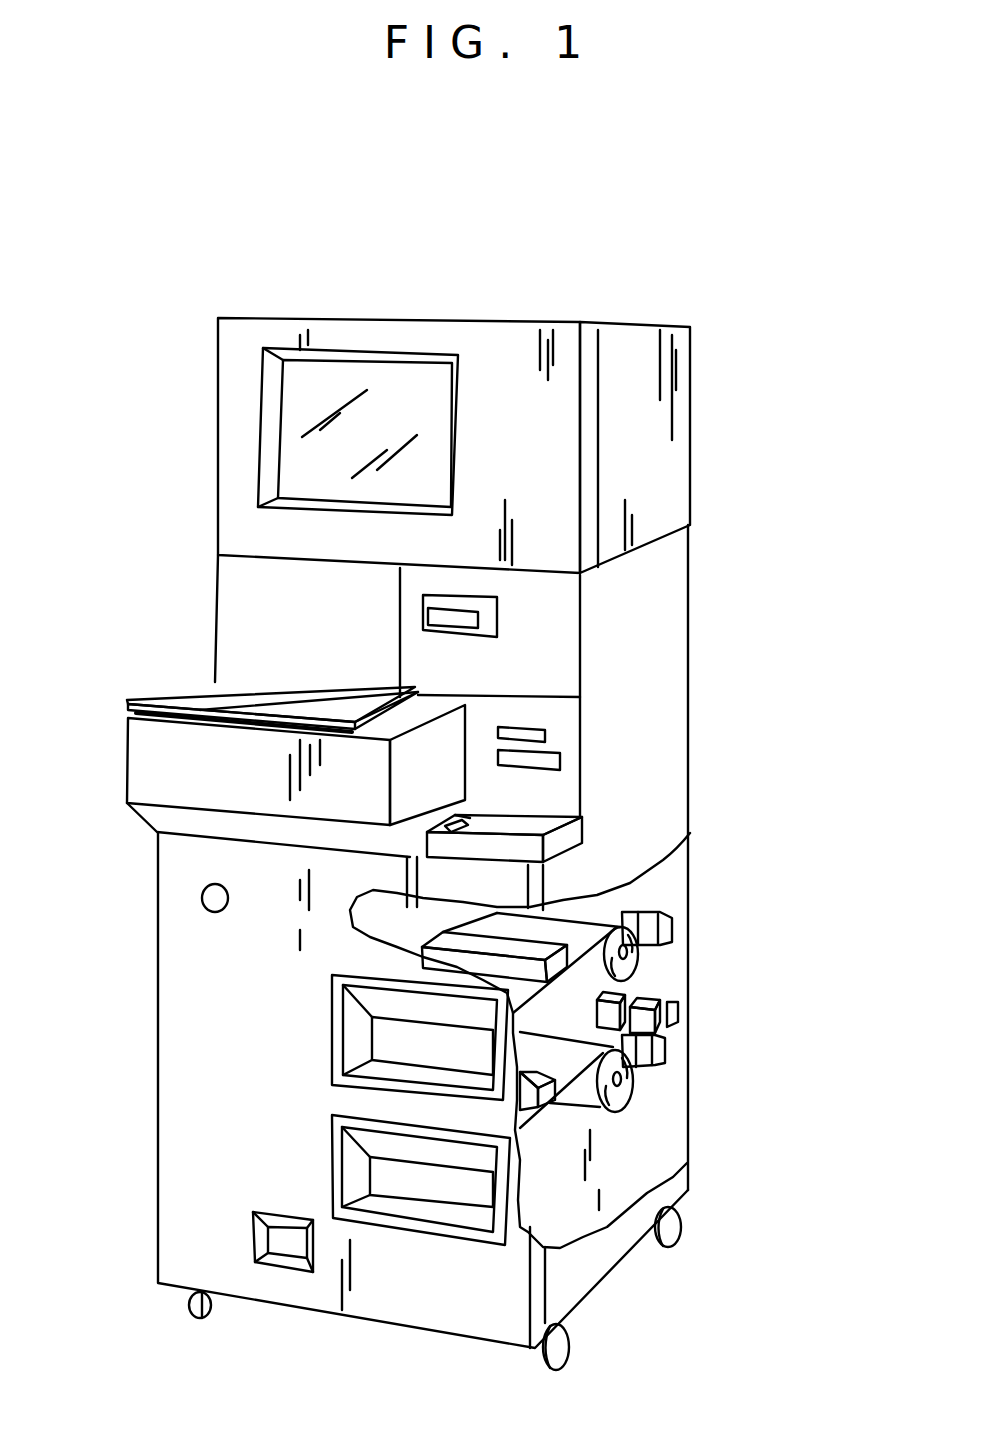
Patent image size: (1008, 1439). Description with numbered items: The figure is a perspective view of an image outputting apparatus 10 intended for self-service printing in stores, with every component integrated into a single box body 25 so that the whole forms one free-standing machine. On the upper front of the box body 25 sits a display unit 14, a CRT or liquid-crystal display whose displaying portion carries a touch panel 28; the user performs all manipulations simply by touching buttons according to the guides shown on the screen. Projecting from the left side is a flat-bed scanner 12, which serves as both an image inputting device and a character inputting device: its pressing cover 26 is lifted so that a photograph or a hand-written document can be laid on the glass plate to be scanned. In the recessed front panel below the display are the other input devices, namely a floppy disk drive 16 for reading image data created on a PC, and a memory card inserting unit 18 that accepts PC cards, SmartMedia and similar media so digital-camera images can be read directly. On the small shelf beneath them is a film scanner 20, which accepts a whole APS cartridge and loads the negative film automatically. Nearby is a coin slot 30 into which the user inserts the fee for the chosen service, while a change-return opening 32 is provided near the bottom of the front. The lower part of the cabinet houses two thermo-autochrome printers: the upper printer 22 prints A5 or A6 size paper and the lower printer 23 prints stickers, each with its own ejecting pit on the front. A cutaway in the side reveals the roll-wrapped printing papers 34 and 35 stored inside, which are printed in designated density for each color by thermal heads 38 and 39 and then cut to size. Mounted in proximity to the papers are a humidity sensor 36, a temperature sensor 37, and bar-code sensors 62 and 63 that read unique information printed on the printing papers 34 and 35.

The image outputting apparatus 10 is at (325, 313).
The flat-bed scanner 12 is at (148, 763).
The display unit 14 is at (438, 370).
The floppy disk drive 16 is at (472, 620).
The memory card inserting unit 18 is at (548, 760).
The film scanner 20 is at (552, 836).
The printer 22 is at (388, 1043).
The printer 23 is at (380, 1178).
The box body 25 is at (672, 1143).
The pressing cover 26 is at (200, 697).
The touch panel 28 is at (290, 403).
The coin slot 30 is at (420, 824).
The change-return opening 32 is at (273, 1243).
The printing paper 34 is at (573, 927).
The printing paper 35 is at (627, 1085).
The humidity sensor 36 is at (620, 997).
The temperature sensor 37 is at (660, 1000).
The thermal head 38 is at (435, 958).
The thermal head 39 is at (547, 1093).
The bar-code sensor 62 is at (655, 933).
The bar-code sensor 63 is at (662, 1044).